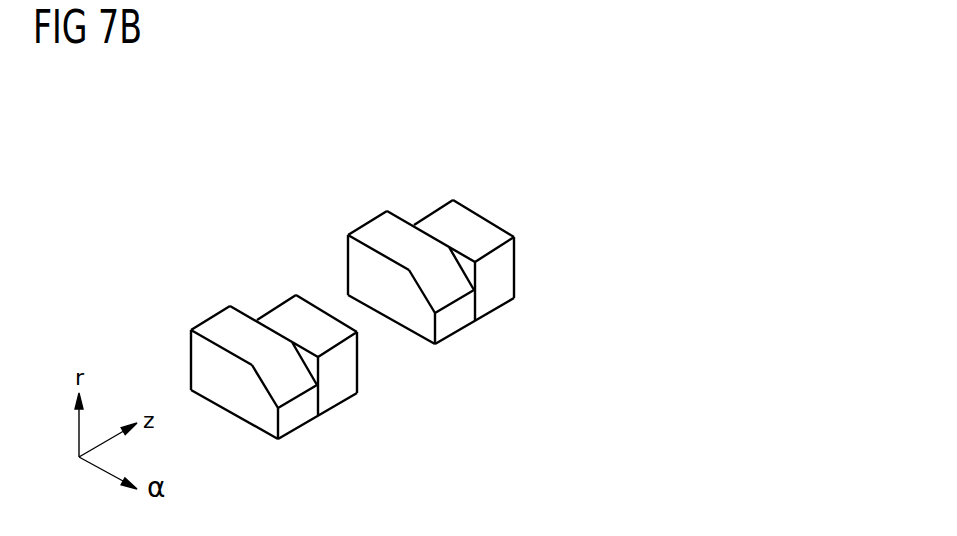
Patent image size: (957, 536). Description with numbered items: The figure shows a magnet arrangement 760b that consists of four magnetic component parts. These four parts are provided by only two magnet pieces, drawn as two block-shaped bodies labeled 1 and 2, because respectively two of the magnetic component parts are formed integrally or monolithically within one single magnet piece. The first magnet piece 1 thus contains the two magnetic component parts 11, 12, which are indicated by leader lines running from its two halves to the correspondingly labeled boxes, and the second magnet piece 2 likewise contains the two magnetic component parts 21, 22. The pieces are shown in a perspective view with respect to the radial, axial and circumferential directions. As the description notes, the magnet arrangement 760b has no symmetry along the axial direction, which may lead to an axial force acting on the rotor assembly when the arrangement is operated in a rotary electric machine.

The magnet arrangement 760b is at (341, 149).
The first element 1 is at (557, 254).
The second element 2 is at (479, 380).
The first sub-element of first element 11 is at (478, 238).
The second sub-element of first element 12 is at (407, 248).
The first sub-element of second element 21 is at (318, 333).
The second sub-element of second element 22 is at (248, 345).